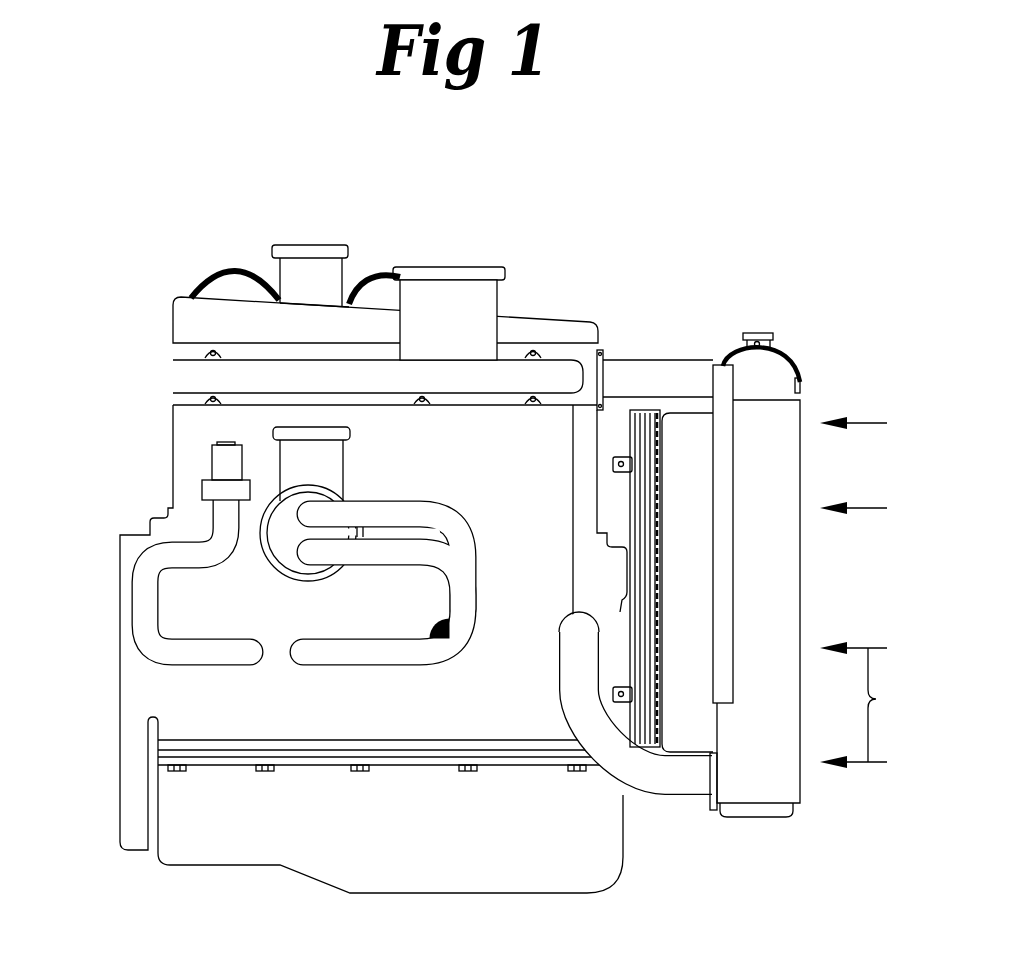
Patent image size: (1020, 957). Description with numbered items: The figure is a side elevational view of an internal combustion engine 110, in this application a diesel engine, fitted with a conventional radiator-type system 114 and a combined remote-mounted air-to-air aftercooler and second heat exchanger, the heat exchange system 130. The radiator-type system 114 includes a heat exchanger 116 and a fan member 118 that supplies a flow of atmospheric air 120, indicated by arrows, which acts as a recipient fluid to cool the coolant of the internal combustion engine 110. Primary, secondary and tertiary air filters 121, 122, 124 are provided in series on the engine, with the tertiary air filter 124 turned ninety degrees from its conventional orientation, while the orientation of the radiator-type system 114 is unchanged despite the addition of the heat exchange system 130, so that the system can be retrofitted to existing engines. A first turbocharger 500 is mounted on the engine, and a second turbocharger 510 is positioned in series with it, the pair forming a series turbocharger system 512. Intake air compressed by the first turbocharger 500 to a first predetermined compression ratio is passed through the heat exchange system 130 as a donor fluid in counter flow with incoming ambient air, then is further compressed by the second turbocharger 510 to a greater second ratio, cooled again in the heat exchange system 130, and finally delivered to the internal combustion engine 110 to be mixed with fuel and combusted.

The internal combustion engine 110 is at (728, 271).
The radiator-type system 114 is at (847, 358).
The heat exchanger 116 is at (762, 582).
The fan member 118 is at (688, 720).
The flow of atmospheric air 120 is at (874, 592).
The primary air filter 121 is at (306, 244).
The secondary air filter 122 is at (218, 320).
The tertiary air filter 124 is at (310, 495).
The combined remote mounted heat exchange system 130 is at (487, 265).
The first turbocharger 500 is at (214, 276).
The second turbocharger 510 is at (378, 272).
The series turbocharger system 512 is at (340, 195).